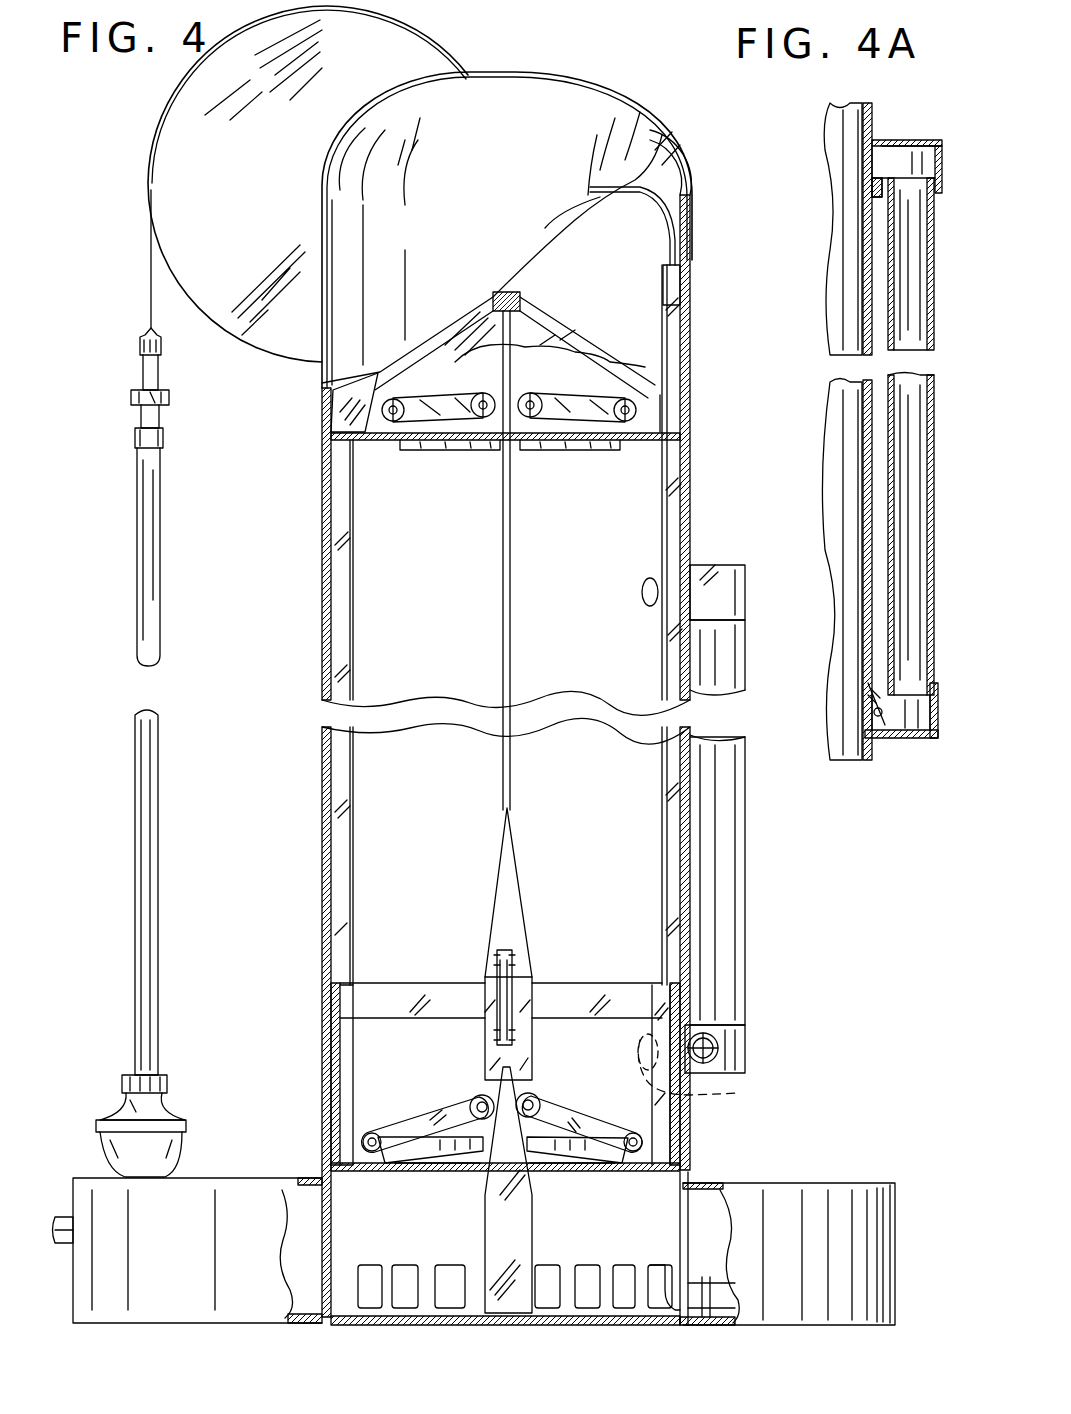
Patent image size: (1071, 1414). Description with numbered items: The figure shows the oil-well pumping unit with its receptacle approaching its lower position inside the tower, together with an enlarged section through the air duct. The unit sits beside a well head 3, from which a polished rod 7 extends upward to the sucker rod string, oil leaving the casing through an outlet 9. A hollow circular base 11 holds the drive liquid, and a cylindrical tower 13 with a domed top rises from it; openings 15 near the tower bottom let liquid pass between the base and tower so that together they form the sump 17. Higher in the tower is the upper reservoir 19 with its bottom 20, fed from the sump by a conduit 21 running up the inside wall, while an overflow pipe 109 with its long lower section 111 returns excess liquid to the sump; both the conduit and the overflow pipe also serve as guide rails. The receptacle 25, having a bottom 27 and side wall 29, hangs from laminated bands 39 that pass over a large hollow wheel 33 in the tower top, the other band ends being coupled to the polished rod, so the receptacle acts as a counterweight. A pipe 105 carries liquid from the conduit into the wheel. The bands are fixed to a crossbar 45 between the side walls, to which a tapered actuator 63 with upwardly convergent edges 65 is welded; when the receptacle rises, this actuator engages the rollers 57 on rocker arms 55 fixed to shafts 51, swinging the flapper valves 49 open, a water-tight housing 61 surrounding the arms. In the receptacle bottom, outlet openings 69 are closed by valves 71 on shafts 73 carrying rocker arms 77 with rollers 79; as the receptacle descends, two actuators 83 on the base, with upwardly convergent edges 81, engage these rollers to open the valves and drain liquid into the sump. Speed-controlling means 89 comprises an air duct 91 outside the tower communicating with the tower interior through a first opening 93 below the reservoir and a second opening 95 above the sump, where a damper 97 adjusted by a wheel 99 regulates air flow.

In FIG. 4, the well head 3 is at (170, 1108).
In FIG. 4, the polished rod 7 is at (160, 540).
In FIG. 4, the outlet 9 is at (60, 1212).
In FIG. 4, the circular base 11 is at (260, 1177).
In FIG. 4, the cylindrical tower 13 is at (355, 640).
In FIG. 4A, the cylindrical tower 13 is at (872, 112).
In FIG. 4, the openings 15 is at (370, 1265).
In FIG. 4, the lower reservoir or sump 17 is at (570, 1252).
In FIG. 4, the upper reservoir 19 is at (606, 290).
In FIG. 4, the reservoir bottom 20 is at (660, 440).
In FIG. 4, the conduit 21 is at (665, 850).
In FIG. 4, the receptacle or bucket 25 is at (345, 995).
In FIG. 4, the receptacle bottom 27 is at (655, 1175).
In FIG. 4, the side wall 29 is at (345, 1105).
In FIG. 4, the wheel or sheave 33 is at (430, 58).
In FIG. 4, the cables or laminated bands 39 is at (150, 270).
In FIG. 4, the crossbar 45 is at (580, 980).
In FIG. 4, the flapper valves 49 is at (455, 455).
In FIG. 4, the shafts 51 is at (393, 418).
In FIG. 4, the rocker arm 55 is at (435, 392).
In FIG. 4, the roller 57 is at (525, 390).
In FIG. 4, the water-tight well or housing 61 is at (565, 340).
In FIG. 4, the tapered actuator 63 is at (530, 1035).
In FIG. 4, the upwardly convergent edges 65 is at (495, 878).
In FIG. 4, the outlet openings 69 is at (455, 1170).
In FIG. 4, the valves 71 is at (420, 1160).
In FIG. 4, the shafts 73 is at (318, 1115).
In FIG. 4, the rocker arms 77 is at (590, 1125).
In FIG. 4, the roller 79 is at (475, 1095).
In FIG. 4, the upwardly convergent edges 81 is at (480, 1070).
In FIG. 4, the actuators 83 is at (448, 1265).
In FIG. 4, the speed controlling means 89 is at (762, 875).
In FIG. 4, the air duct 91 is at (750, 1000).
In FIG. 4A, the air duct 91 is at (932, 505).
In FIG. 4, the first opening 93 is at (640, 592).
In FIG. 4A, the first opening 93 is at (862, 165).
In FIG. 4, the second opening 95 is at (707, 1067).
In FIG. 4A, the second opening 95 is at (868, 728).
In FIG. 4A, the damper 97 is at (890, 715).
In FIG. 4, the wheel 99 is at (725, 1078).
In FIG. 4, the pipe 105 is at (640, 205).
In FIG. 4, the overflow pipe 109 is at (370, 625).
In FIG. 4, the lower section 111 is at (330, 395).